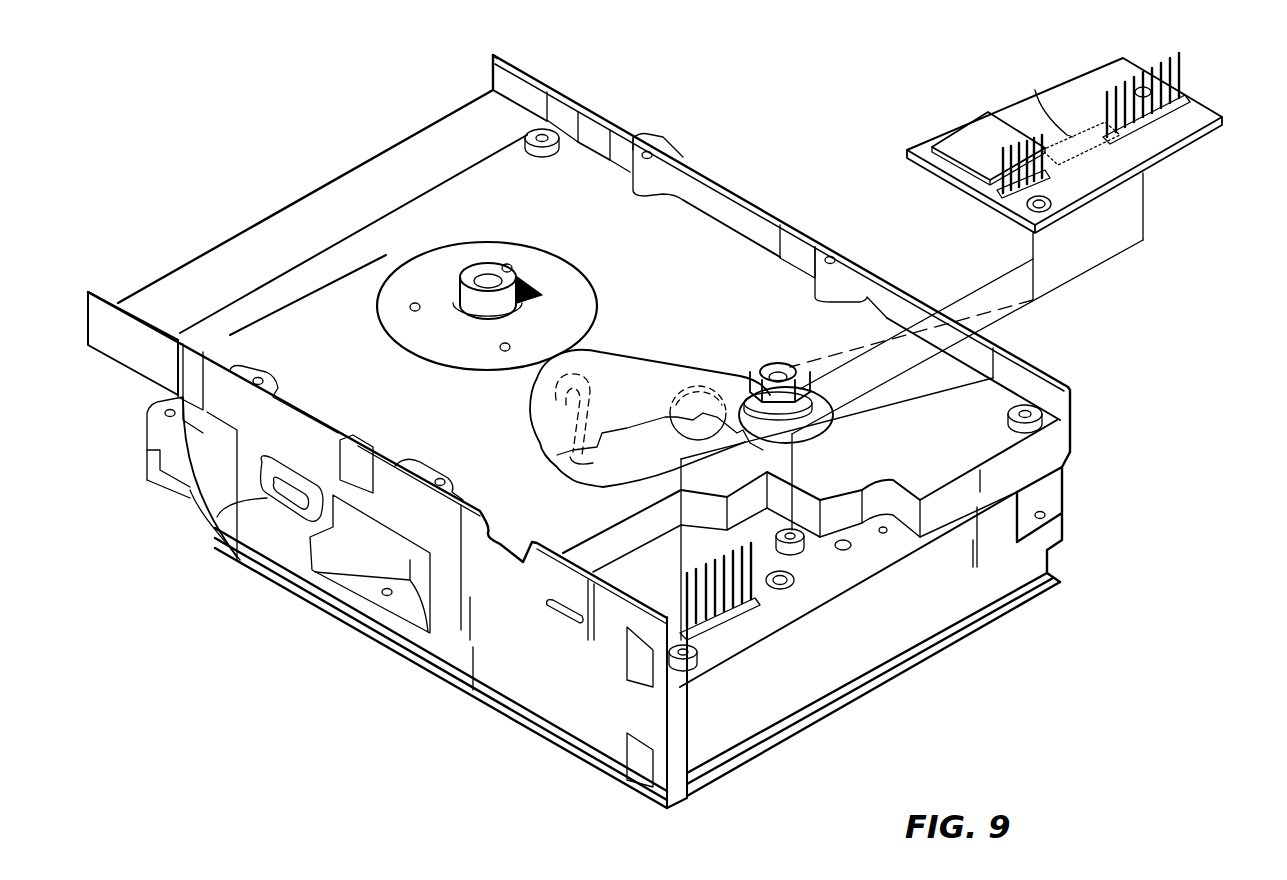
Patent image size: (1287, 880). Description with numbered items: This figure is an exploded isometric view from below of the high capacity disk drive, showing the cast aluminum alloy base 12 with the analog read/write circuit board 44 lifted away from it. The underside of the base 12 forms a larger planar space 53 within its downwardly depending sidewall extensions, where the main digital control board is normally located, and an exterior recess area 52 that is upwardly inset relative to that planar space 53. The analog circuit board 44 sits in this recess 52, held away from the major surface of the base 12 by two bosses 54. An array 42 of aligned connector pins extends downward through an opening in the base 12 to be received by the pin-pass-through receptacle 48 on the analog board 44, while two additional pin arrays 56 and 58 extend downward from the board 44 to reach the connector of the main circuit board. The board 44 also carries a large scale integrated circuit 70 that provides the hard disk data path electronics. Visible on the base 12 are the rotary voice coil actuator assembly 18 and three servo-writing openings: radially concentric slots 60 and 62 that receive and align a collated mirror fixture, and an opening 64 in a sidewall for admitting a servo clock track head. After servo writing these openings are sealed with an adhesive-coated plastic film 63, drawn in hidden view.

The base 12 is at (520, 670).
The rotary voice coil actuator assembly 18 is at (780, 367).
The array of aligned connector pins 42 is at (768, 596).
The analog read/write circuit board 44 is at (1187, 123).
The pin-pass-through receptacle 48 is at (1035, 90).
The recess area 52 is at (670, 578).
The planar space 53 is at (464, 217).
The bosses 54 is at (807, 536).
The pin array 56 is at (1185, 92).
The pin array 58 is at (1003, 200).
The radially concentric slot 60 is at (693, 408).
The radially concentric slot 62 is at (587, 460).
The adhesive-coated plastic film 63 is at (617, 370).
The opening 64 is at (222, 525).
The large scale integrated circuit 70 is at (955, 135).